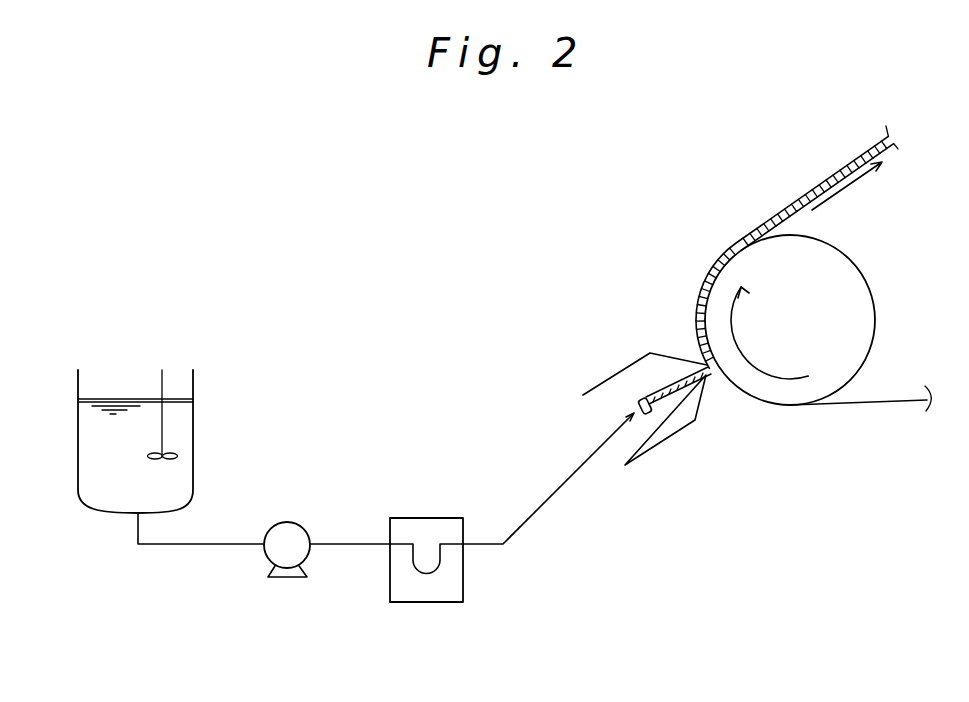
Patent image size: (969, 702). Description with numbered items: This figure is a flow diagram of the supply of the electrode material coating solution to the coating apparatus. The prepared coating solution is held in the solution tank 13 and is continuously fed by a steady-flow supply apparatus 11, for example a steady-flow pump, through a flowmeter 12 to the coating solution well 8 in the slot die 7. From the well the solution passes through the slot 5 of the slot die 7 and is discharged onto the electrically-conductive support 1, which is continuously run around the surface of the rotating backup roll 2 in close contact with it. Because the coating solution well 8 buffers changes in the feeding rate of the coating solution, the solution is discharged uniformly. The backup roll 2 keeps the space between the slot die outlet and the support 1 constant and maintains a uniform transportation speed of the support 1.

The electrically-conductive support 1 is at (847, 405).
The backup roll 2 is at (852, 294).
The slot 5 is at (670, 402).
The slot die 7 is at (637, 377).
The coating solution well 8 is at (645, 421).
The steady-flow supply apparatus 11 is at (297, 522).
The flowmeter 12 is at (450, 595).
The solution tank 13 is at (197, 412).